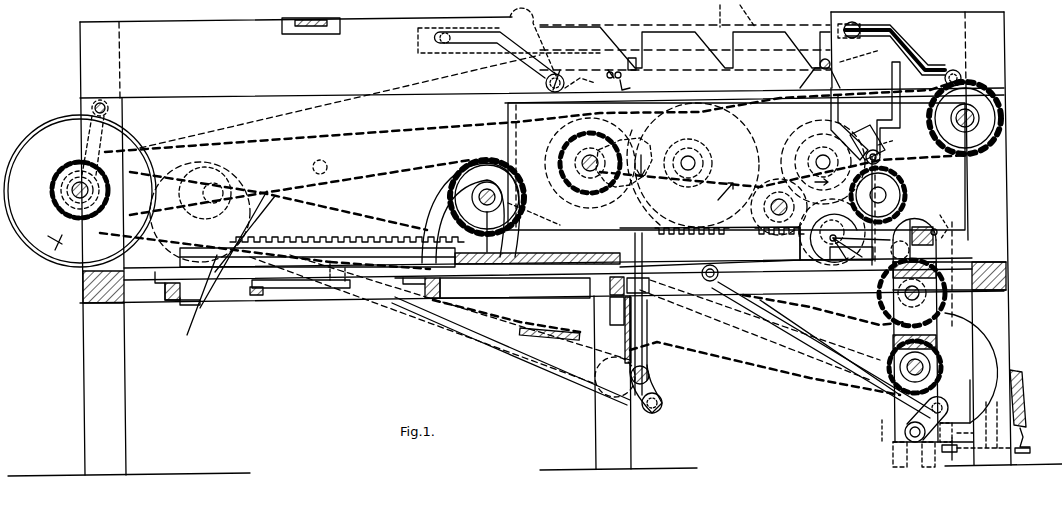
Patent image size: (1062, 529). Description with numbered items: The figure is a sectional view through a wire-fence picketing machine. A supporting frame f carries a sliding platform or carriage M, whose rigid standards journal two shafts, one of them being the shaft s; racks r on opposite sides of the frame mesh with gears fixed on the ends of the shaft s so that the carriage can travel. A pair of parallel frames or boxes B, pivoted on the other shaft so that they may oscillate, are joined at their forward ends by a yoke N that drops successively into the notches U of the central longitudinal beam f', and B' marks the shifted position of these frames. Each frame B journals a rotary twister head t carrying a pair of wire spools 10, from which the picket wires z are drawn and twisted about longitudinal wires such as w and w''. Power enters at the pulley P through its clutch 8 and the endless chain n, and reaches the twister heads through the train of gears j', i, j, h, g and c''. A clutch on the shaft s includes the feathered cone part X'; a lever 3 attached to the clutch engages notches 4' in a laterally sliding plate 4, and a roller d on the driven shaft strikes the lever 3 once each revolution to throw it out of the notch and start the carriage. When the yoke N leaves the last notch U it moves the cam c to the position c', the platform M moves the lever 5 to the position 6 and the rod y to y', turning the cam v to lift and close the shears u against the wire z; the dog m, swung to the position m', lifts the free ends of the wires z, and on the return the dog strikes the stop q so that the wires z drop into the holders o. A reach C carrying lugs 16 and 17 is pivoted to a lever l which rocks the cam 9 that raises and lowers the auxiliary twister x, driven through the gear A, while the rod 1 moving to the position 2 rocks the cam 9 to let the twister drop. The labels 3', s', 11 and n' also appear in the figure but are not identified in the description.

The pulley P is at (80, 191).
The clutch 8 is at (78, 175).
The frame or beam f' is at (542, 160).
The supporting frame f is at (535, 369).
The reach C is at (478, 282).
The plate 4 is at (515, 288).
The notches 4' is at (410, 270).
The lug 16 is at (610, 280).
The shears u is at (634, 301).
The lower chain 3' is at (265, 245).
The chain n is at (536, 133).
The shifted position of frames B B' is at (300, 195).
The moved position of lever 5 6 is at (200, 212).
The shaft s' is at (274, 180).
The lever 5 is at (237, 249).
The lug 17 is at (201, 295).
The racks r is at (322, 248).
The sliding platform or carriage M is at (537, 250).
The clutch part X' is at (473, 201).
The shaft s is at (553, 165).
The lever 3 is at (534, 214).
The frames or boxes B is at (693, 165).
The gear g is at (688, 163).
The gear h is at (726, 180).
The projection or roller d is at (612, 144).
The gear c'' is at (640, 174).
The gear j is at (779, 207).
The gear i is at (823, 162).
The longitudinal wire w is at (746, 247).
The longitudinal wire w'' is at (776, 244).
The rotary twister head t is at (815, 262).
The segment 11 is at (832, 232).
The wire spools 10 is at (836, 232).
The picket wires z is at (751, 211).
The dog m is at (858, 126).
The stop q is at (894, 108).
The cam c is at (781, 88).
The yoke or cross piece N is at (820, 73).
The notches U is at (685, 57).
The swung position of dog m m' is at (638, 83).
The elevated position of cam c c' is at (509, 46).
The moved position of rod 1 2 is at (787, 341).
The rod 1 is at (830, 347).
The lower chains n' is at (767, 344).
The gear A is at (946, 342).
The cam 9 is at (875, 431).
The auxiliary twister x is at (945, 228).
The holders o is at (938, 231).
The lever l is at (1024, 411).
The cam v is at (628, 323).
The rod y is at (511, 351).
The moved position of rod y y' is at (440, 319).
The gear j' is at (300, 282).